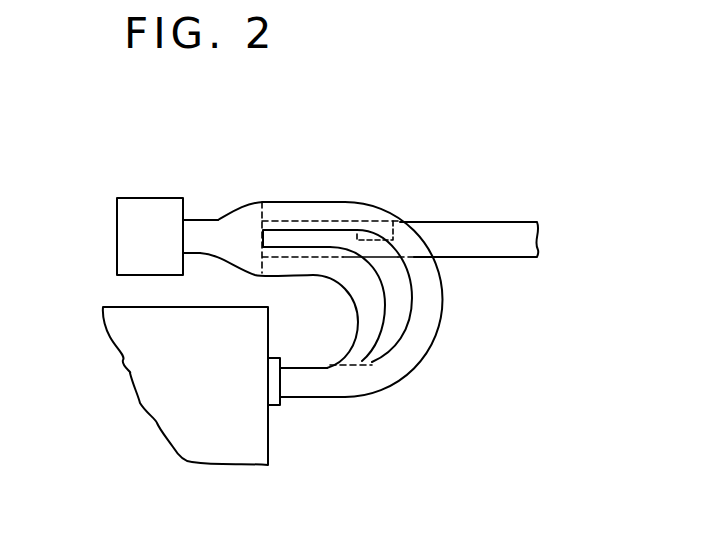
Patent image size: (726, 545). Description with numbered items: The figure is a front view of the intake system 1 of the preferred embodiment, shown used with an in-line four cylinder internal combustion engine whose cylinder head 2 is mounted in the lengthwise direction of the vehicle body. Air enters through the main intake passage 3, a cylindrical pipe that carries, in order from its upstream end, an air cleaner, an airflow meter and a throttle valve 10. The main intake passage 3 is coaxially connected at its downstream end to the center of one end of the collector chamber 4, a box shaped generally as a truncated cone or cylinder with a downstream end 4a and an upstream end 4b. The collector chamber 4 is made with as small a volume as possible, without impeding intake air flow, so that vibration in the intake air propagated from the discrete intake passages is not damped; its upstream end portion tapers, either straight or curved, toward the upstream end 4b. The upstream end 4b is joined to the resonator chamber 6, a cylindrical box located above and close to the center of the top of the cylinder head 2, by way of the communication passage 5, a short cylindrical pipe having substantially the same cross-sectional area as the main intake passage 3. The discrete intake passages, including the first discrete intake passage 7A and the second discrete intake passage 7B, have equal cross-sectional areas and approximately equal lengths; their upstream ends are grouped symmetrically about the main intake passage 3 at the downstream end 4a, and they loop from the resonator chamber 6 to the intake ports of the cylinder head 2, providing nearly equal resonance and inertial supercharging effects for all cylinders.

The intake system 1 is at (409, 152).
The cylinder head 2 is at (272, 450).
The main intake passage 3 is at (505, 222).
The collector chamber 4 is at (233, 272).
The downstream end of collector chamber 4a is at (272, 212).
The upstream end of collector chamber 4b is at (218, 220).
The communication passage 5 is at (197, 220).
The resonator chamber 6 is at (139, 197).
The first discrete intake passage 7A is at (348, 382).
The second discrete intake passage 7B is at (438, 320).
The throttle valve 10 is at (404, 216).